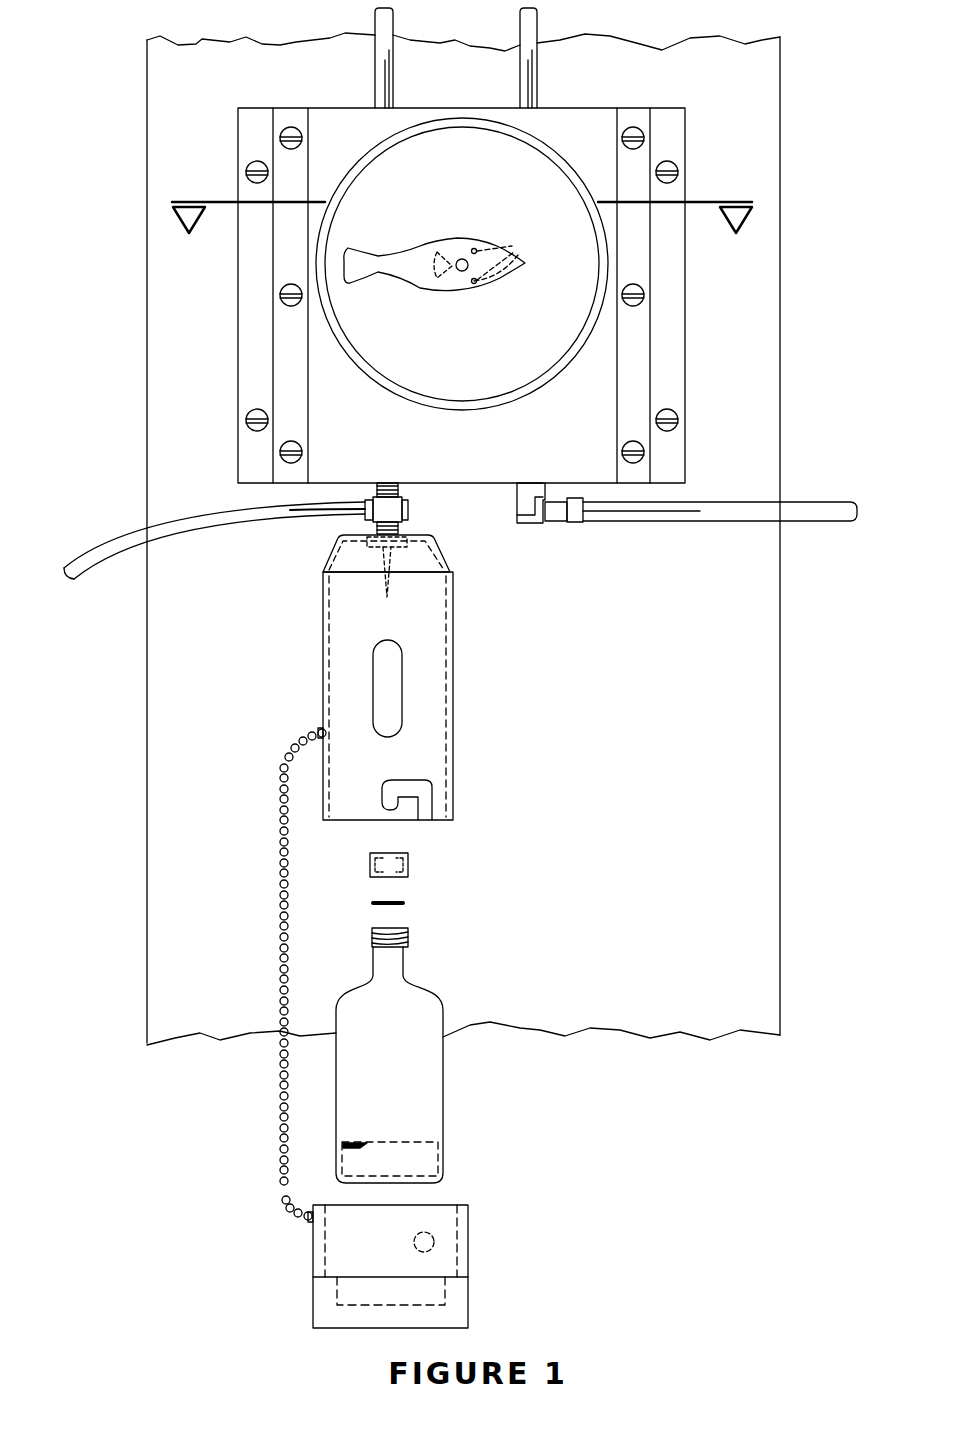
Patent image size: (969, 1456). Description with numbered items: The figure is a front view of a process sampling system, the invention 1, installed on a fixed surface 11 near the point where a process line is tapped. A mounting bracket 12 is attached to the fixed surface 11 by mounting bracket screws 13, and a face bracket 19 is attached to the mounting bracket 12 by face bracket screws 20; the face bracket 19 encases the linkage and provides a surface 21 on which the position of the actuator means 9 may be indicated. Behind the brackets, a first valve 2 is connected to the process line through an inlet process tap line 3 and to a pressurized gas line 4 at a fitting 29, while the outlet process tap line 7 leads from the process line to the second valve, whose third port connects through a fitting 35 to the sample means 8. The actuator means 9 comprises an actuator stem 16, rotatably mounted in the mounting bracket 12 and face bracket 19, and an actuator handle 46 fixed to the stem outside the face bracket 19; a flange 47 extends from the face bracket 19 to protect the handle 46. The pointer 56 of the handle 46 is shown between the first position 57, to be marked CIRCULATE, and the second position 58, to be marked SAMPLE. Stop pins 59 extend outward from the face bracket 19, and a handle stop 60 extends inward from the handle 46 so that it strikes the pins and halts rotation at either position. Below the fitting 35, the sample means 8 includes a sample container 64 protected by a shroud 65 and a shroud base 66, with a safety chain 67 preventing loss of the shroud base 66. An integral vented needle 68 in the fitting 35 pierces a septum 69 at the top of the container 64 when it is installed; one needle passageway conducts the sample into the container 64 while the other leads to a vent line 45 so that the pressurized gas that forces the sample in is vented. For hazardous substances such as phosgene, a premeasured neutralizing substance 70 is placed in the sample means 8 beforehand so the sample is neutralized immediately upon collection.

The invention 1 is at (682, 80).
The first valve 2 is at (462, 205).
The inlet process tap line 3 is at (537, 15).
The pressurized gas line 4 is at (802, 515).
The outlet process tap line 7 is at (392, 15).
The sample means 8 is at (478, 667).
The actuator means 9 is at (455, 224).
The fixed surface 11 is at (187, 272).
The mounting bracket 12 is at (263, 366).
The mounting bracket screws 13 is at (252, 173).
The actuator stem 16 is at (462, 272).
The face bracket 19 is at (550, 127).
The face bracket screws 20 is at (285, 141).
The surface 21 is at (337, 140).
The fitting 29 is at (533, 523).
The fitting 35 is at (402, 508).
The vent line 45 is at (212, 516).
The actuator handle 46 is at (338, 252).
The flange 47 is at (530, 392).
The pointer 56 is at (516, 275).
The first position 57 is at (461, 145).
The second position 58 is at (461, 380).
The stop pins 59 is at (518, 247).
The handle stop 60 is at (440, 286).
The sample container 64 is at (425, 1087).
The shroud 65 is at (435, 742).
The shroud base 66 is at (462, 1280).
The safety chain 67 is at (281, 1078).
The vented needle 68 is at (390, 570).
The septum 69 is at (403, 902).
The neutralizing substance 70 is at (427, 1158).